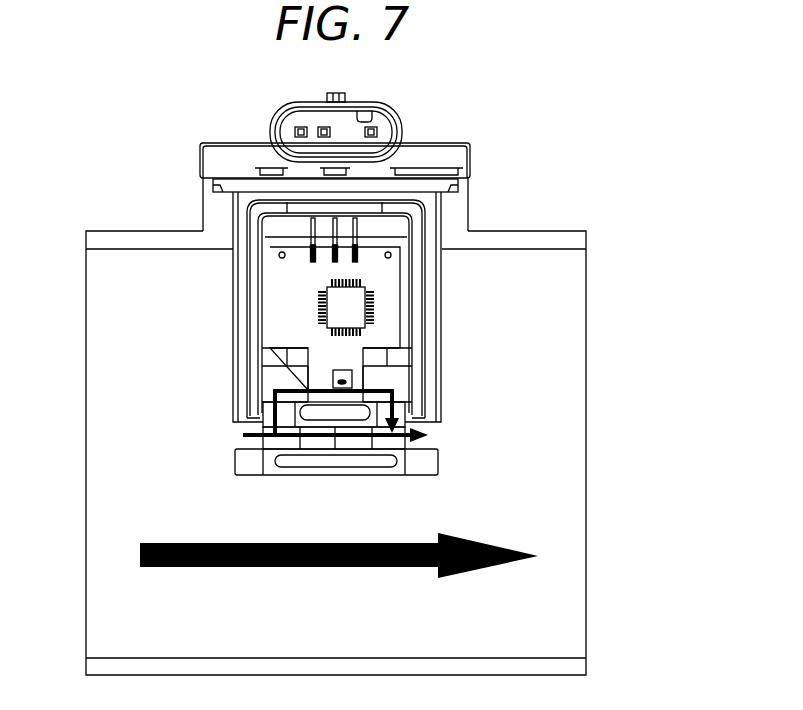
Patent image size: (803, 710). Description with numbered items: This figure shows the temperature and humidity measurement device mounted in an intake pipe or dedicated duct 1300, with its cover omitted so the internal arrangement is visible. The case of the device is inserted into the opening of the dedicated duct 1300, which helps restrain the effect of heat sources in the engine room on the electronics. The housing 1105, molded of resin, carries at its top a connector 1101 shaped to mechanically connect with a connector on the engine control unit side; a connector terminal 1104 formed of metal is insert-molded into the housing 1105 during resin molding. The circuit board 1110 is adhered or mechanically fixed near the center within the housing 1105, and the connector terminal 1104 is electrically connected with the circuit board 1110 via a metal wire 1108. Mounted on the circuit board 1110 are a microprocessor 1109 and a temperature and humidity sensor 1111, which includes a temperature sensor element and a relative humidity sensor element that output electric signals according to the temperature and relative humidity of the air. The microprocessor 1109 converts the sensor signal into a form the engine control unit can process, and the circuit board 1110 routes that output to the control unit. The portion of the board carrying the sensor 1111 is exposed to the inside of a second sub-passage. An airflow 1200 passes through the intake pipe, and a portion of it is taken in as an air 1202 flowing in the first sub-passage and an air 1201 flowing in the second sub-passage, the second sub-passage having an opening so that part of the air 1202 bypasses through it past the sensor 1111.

The connector 1101 is at (398, 113).
The connector terminal 1104 is at (325, 130).
The housing 1105 is at (438, 303).
The metal wire 1108 is at (313, 244).
The microprocessor 1109 is at (337, 307).
The circuit board 1110 is at (288, 285).
The temperature and humidity sensor 1111 is at (345, 378).
The airflow 1200 is at (475, 542).
The air flowing in the second sub-passage 1201 is at (400, 392).
The air flowing in the first sub-passage 1202 is at (425, 432).
The dedicated duct 1300 is at (505, 240).